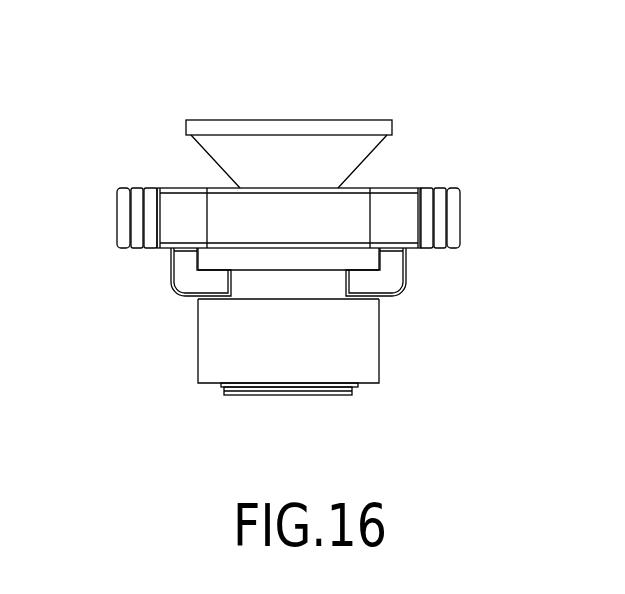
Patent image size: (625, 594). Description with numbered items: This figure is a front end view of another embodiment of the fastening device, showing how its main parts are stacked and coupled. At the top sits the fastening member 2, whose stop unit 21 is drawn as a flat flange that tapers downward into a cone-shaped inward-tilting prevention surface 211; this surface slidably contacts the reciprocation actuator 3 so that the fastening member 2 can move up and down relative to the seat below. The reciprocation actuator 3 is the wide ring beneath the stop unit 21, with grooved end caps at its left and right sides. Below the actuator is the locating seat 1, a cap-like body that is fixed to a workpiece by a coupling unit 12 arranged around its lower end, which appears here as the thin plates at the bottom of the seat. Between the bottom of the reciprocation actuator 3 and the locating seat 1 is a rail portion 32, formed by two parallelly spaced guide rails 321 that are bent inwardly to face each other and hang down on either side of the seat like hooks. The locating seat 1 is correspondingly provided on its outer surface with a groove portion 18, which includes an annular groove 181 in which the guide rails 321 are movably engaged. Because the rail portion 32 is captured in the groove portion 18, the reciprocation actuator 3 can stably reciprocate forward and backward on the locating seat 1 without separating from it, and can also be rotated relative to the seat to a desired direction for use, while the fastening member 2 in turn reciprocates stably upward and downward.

The locating seat 1 is at (283, 341).
The coupling unit 12 is at (352, 392).
The groove portion 18 is at (272, 305).
The annular groove 181 is at (268, 285).
The fastening member 2 is at (330, 105).
The stop unit 21 is at (357, 120).
The inward-tilting prevention surface 211 is at (355, 153).
The reciprocation actuator 3 is at (466, 186).
The rail portion 32 is at (295, 291).
The guide rails 321 is at (183, 278).